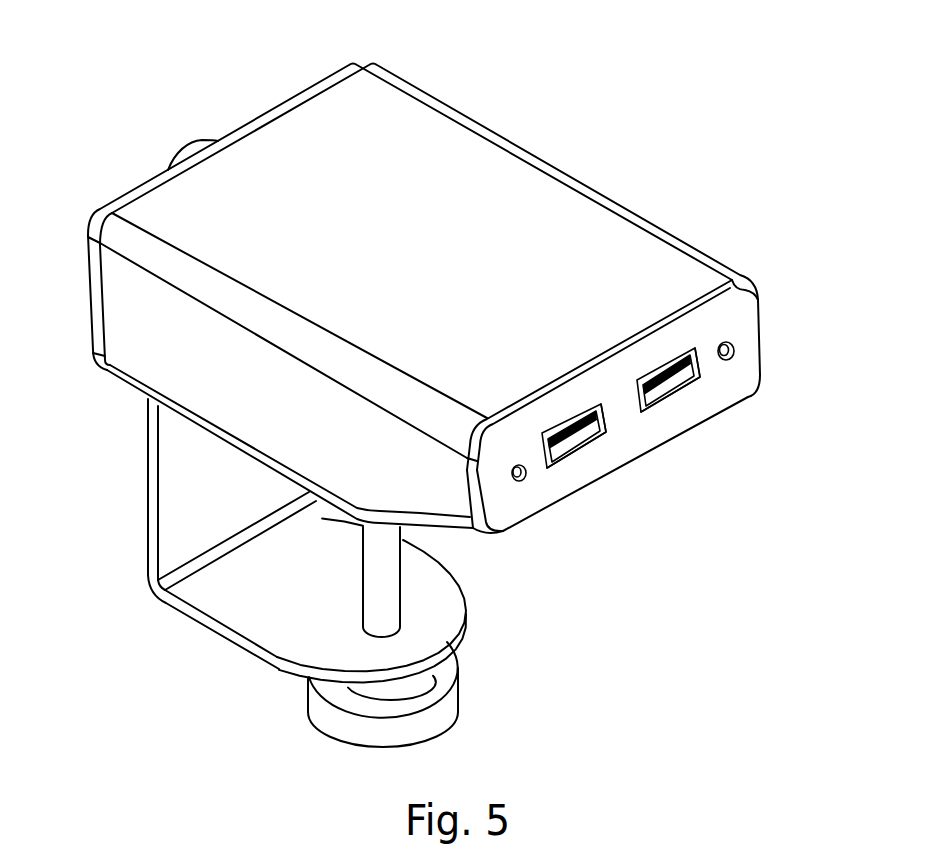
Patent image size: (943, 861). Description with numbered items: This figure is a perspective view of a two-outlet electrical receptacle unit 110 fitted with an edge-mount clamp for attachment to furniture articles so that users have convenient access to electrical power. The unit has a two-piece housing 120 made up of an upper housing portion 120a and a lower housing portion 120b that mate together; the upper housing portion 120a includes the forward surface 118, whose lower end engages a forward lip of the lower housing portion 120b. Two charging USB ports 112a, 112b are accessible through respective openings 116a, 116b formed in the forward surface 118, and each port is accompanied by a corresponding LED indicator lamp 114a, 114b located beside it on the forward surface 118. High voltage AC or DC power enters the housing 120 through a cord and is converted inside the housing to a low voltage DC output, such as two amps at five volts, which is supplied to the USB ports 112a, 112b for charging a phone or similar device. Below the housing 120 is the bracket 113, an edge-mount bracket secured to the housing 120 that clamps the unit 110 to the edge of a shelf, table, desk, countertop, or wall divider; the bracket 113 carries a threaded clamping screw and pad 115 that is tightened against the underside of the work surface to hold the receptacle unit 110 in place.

The electrical receptacle unit 110 is at (572, 93).
The bracket 113 is at (147, 493).
The clamping screw 115 is at (363, 563).
The housing 120 is at (607, 227).
The upper housing portion 120a is at (680, 240).
The lower housing portion 120b is at (460, 523).
The forward surface 118 is at (730, 317).
The charging USB port 112a is at (573, 440).
The charging USB port 112b is at (665, 392).
The opening 116a is at (607, 440).
The opening 116b is at (703, 383).
The LED indicator lamp 114a is at (521, 482).
The LED indicator lamp 114b is at (733, 352).